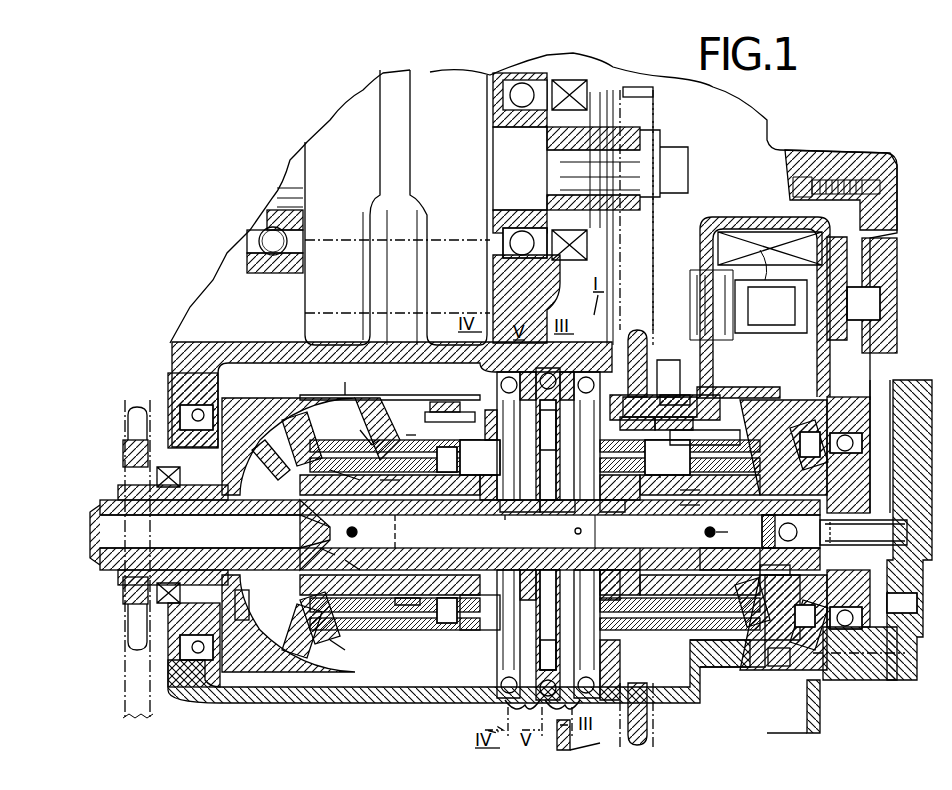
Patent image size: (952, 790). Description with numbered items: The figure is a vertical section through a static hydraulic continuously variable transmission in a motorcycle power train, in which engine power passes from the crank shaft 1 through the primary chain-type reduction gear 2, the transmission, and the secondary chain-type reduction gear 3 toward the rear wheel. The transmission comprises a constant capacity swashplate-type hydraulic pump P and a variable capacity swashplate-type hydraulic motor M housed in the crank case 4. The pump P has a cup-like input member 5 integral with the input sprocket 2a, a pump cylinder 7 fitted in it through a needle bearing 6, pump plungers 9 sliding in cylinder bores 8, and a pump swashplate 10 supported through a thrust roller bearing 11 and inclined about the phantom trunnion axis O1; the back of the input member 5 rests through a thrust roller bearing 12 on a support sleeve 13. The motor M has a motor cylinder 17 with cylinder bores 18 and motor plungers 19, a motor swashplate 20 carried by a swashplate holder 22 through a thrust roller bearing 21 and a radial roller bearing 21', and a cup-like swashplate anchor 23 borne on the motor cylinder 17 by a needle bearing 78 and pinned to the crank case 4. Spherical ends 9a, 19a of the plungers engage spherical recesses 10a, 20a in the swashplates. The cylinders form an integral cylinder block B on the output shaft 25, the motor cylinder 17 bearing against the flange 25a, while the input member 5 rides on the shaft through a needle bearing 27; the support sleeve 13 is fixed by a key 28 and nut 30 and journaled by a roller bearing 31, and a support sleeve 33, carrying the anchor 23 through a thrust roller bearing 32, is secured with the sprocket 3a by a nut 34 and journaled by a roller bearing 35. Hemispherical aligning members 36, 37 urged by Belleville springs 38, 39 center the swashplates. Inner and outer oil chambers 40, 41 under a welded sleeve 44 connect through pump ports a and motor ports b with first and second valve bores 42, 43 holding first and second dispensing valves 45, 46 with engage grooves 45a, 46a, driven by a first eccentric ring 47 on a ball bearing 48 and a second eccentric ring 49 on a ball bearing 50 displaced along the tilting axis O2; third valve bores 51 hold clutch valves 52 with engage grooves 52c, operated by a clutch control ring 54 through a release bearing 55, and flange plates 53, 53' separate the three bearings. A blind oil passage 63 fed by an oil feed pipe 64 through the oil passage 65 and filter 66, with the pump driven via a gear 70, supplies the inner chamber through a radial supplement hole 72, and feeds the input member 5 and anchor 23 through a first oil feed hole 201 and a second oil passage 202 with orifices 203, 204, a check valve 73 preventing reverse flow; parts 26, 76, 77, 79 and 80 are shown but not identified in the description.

The crank shaft 1 is at (524, 175).
The primary chain-type reduction gear 2 is at (664, 260).
The input sprocket 2a is at (637, 332).
The secondary chain-type reduction gear 3 is at (123, 665).
The sprocket of the secondary reduction gear 3a is at (125, 444).
The crank case 4 is at (210, 342).
The input member 5 is at (672, 395).
The needle bearing 6 is at (654, 417).
The pump cylinder 7 is at (683, 417).
The cylinder bores 8 is at (680, 535).
The pump plungers 9 is at (664, 476).
The spherical ends 9a is at (760, 430).
The pump swashplate 10 is at (713, 669).
The spherical recesses 10a is at (780, 436).
The thrust roller bearing 11 is at (752, 602).
The thrust roller bearing 12 is at (808, 455).
The support sleeve 13 is at (807, 616).
The motor cylinder 17 is at (378, 440).
The cylinder bores 18 is at (452, 464).
The motor plungers 19 is at (417, 476).
The spherical ends 19a is at (275, 462).
The motor swashplate 20 is at (275, 410).
The spherical recesses 20a is at (306, 440).
The thrust roller bearing 21 is at (316, 618).
The radial roller bearing 21' is at (322, 639).
The swashplate holder 22 is at (300, 420).
The swashplate anchor 23 is at (380, 395).
The output shaft 25 is at (92, 522).
The flange 25a is at (359, 558).
The ring 26 is at (727, 554).
The needle bearing 27 is at (782, 607).
The key 28 is at (902, 603).
The nut 30 is at (912, 605).
The roller bearing 31 is at (859, 653).
The thrust roller bearing 32 is at (250, 607).
The support sleeve 33 is at (188, 548).
The nut 34 is at (118, 575).
The roller bearing 35 is at (192, 410).
The hemispherical aligning member 36 is at (780, 531).
The hemispherical aligning member 37 is at (315, 535).
The Belleville springs 38 is at (728, 532).
The Belleville springs 39 is at (385, 477).
The inner hydraulic oil chamber 40 is at (520, 507).
The outer hydraulic oil chamber 41 is at (492, 408).
The first valve bores 42 is at (592, 378).
The second valve bores 43 is at (492, 480).
The sleeve 44 is at (612, 400).
The first dispensing valves 45 is at (612, 476).
The engage grooves 45a is at (606, 507).
The second dispensing valves 46 is at (498, 398).
The engage grooves 46a is at (502, 528).
The first eccentric ring 47 is at (603, 618).
The ball bearing 48 is at (570, 368).
The second eccentric ring 49 is at (520, 570).
The ball bearing 50 is at (512, 375).
The third valve bores 51 is at (546, 432).
The clutch valves 52 is at (552, 529).
The engage grooves 52c is at (554, 531).
The flange plate 53 is at (522, 694).
The flange plate 53' is at (563, 695).
The clutch control ring 54 is at (555, 522).
The release bearing 55 is at (547, 646).
The blind oil passage 63 is at (639, 545).
The oil feed pipe 64 is at (930, 532).
The oil passage 65 is at (878, 342).
The filter 66 is at (757, 235).
The gear 70 is at (779, 662).
The radial supplement hole 72 is at (603, 531).
The check valve 73 is at (773, 571).
The ring 76 is at (407, 606).
The ring 77 is at (705, 435).
The needle bearing 78 is at (443, 402).
The ring 79 is at (366, 432).
The bore 80 is at (407, 531).
The first oil feed hole 201 is at (692, 504).
The second oil passage 202 is at (326, 549).
The orifice 203 is at (692, 484).
The orifice 204 is at (360, 478).
The pump ports a is at (659, 464).
The motor ports b is at (497, 457).
The cylinder block B is at (410, 435).
The hydraulic motor M is at (345, 382).
The phantom trunnion axis O1 is at (699, 532).
The tilting axis O2 is at (366, 532).
The hydraulic pump P is at (664, 372).